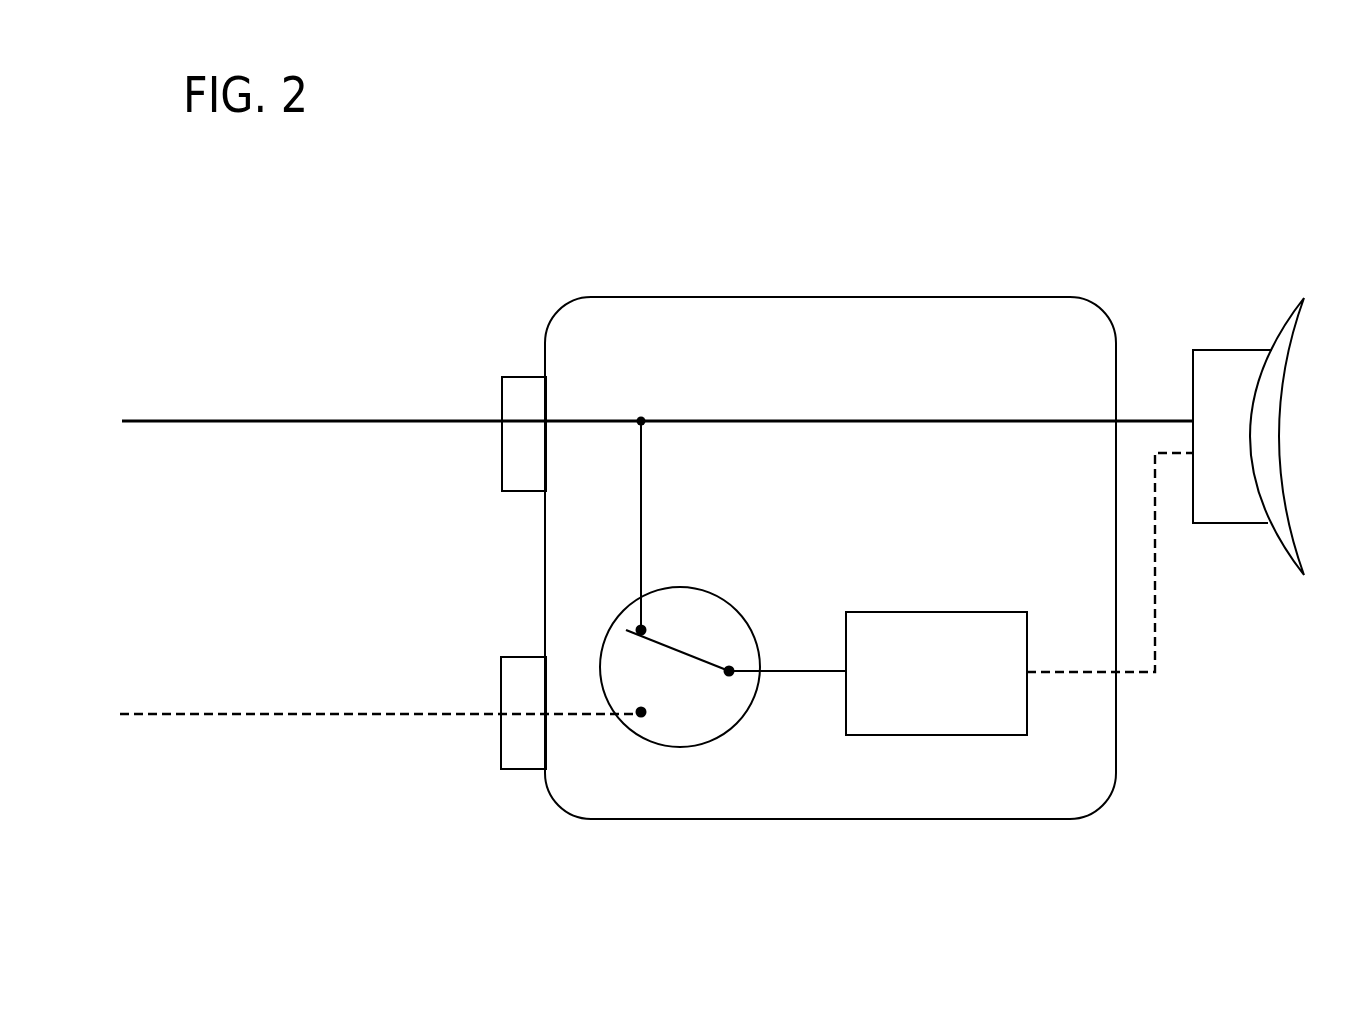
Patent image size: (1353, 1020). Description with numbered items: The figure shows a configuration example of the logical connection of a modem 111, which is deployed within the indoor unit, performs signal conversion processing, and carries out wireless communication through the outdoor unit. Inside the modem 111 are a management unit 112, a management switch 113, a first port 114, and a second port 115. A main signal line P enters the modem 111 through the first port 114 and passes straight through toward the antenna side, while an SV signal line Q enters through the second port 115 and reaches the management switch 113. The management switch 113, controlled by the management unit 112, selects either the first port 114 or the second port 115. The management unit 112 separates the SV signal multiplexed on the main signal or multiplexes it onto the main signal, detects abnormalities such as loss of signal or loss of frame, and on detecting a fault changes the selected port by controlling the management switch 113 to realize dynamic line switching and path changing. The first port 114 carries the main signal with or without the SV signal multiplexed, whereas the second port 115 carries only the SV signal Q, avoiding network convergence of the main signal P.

The modem 111 is at (974, 297).
The management unit 112 is at (934, 612).
The management switch 113 is at (716, 594).
The first port 114 is at (526, 377).
The second port 115 is at (526, 657).
The signal line P is at (314, 418).
The signal line Q is at (300, 710).